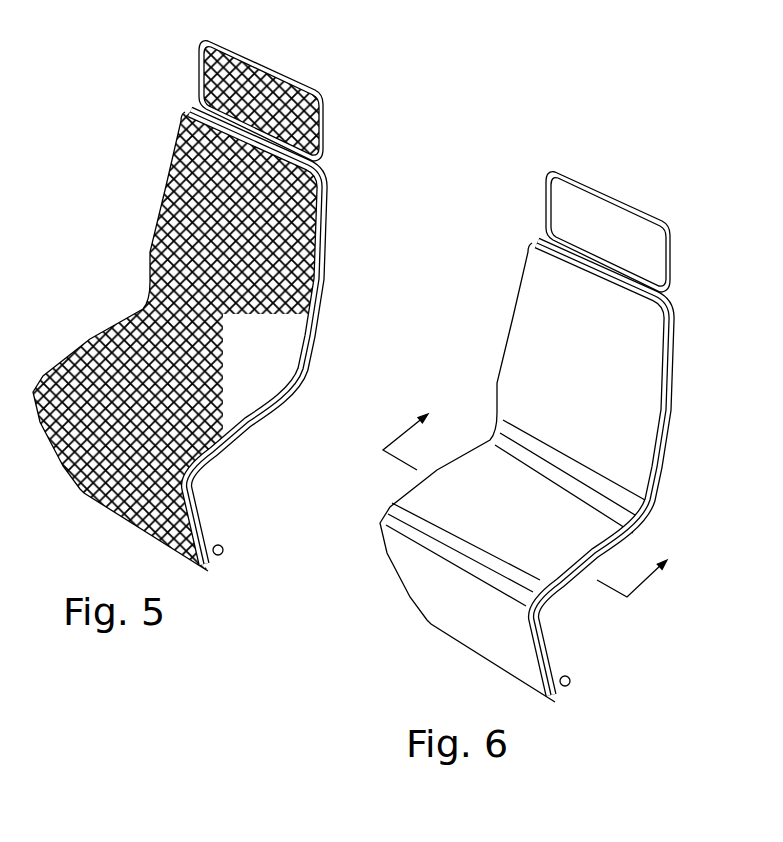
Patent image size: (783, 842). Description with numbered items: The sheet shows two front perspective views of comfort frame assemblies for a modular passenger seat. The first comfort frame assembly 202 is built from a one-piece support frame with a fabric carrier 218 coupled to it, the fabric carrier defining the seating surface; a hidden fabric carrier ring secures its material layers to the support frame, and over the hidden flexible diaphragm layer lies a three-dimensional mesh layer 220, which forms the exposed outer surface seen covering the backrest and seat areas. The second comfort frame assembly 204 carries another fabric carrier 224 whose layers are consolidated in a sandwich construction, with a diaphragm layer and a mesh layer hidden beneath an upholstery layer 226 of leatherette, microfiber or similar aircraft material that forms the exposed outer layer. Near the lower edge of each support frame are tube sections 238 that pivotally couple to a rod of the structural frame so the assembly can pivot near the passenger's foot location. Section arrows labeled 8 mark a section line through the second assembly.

In FIG. 5, the comfort frame assembly 202 is at (312, 301).
In FIG. 6, the comfort frame assembly 204 is at (673, 307).
In FIG. 5, the fabric carrier 218 is at (178, 219).
In FIG. 5, the three-dimensional mesh layer 220 is at (175, 445).
In FIG. 6, the fabric carrier 224 is at (545, 365).
In FIG. 6, the upholstery layer 226 is at (552, 532).
In FIG. 5, the tube sections 238 is at (249, 598).
In FIG. 6, the tube sections 238 is at (570, 687).
In FIG. 6, the section line 8- 8 is at (532, 496).